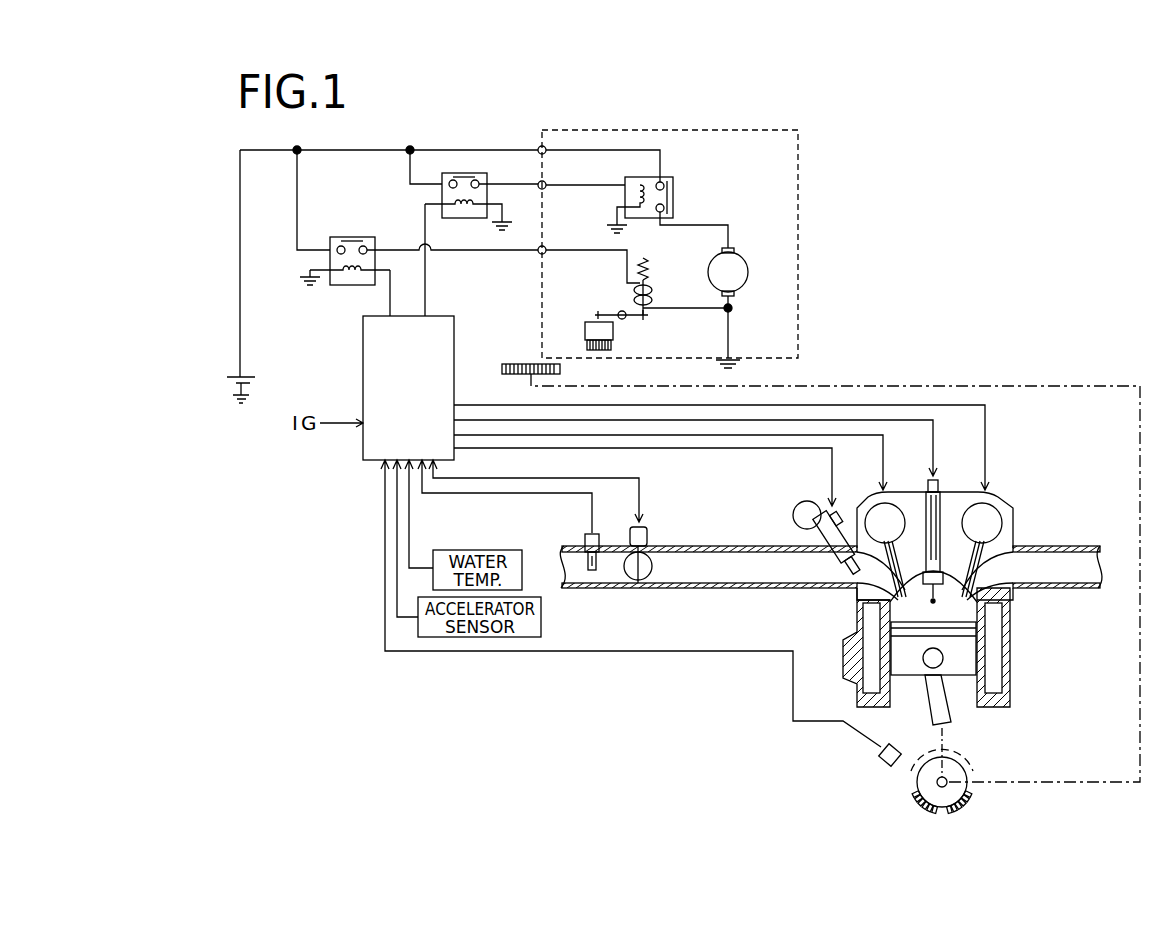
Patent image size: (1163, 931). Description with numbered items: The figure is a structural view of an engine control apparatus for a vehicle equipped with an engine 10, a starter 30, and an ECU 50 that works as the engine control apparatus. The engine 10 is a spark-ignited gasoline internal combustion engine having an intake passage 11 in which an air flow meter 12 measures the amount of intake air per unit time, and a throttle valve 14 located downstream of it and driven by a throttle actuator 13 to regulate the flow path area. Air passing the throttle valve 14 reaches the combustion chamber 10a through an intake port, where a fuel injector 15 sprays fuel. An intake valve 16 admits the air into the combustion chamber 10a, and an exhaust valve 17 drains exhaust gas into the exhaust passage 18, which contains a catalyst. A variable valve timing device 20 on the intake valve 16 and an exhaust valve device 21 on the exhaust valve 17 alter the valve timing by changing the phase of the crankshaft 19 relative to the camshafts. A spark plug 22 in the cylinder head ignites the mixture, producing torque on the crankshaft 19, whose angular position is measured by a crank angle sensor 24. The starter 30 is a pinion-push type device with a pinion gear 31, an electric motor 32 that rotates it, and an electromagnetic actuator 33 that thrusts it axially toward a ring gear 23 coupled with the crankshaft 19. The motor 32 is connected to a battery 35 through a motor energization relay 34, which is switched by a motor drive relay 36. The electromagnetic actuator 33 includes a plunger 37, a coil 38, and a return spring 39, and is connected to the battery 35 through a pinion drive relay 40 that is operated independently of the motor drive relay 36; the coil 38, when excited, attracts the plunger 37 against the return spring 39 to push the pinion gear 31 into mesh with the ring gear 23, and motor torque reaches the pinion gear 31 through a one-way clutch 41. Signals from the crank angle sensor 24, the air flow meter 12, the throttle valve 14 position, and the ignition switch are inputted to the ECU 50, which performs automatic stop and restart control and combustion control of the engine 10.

The engine 10 is at (952, 492).
The combustion chamber 10a is at (1006, 630).
The intake passage 11 is at (612, 546).
The air flow meter 12 is at (588, 533).
The throttle actuator 13 is at (648, 530).
The throttle valve 14 is at (628, 566).
The fuel injector 15 is at (842, 528).
The intake valve 16 is at (857, 616).
The exhaust valve 17 is at (1010, 612).
The exhaust passage 18 is at (1070, 548).
The crankshaft 19 is at (962, 776).
The variable valve timing device 20 is at (886, 495).
The exhaust valve device 21 is at (996, 506).
The spark plug 22 is at (943, 494).
The ring gear 23 is at (503, 365).
The crank angle sensor 24 is at (891, 747).
The starter 30 is at (735, 130).
The pinion gear 31 is at (613, 345).
The electric motor 32 is at (748, 272).
The electromagnetic actuator 33 is at (679, 262).
The motor energization relay 34 is at (673, 183).
The battery 35 is at (240, 376).
The motor drive relay 36 is at (452, 218).
The plunger 37 is at (652, 301).
The coil 38 is at (652, 289).
The return spring 39 is at (643, 258).
The pinion drive relay 40 is at (353, 237).
The one-way clutch 41 is at (613, 330).
The ECU 50 is at (445, 316).